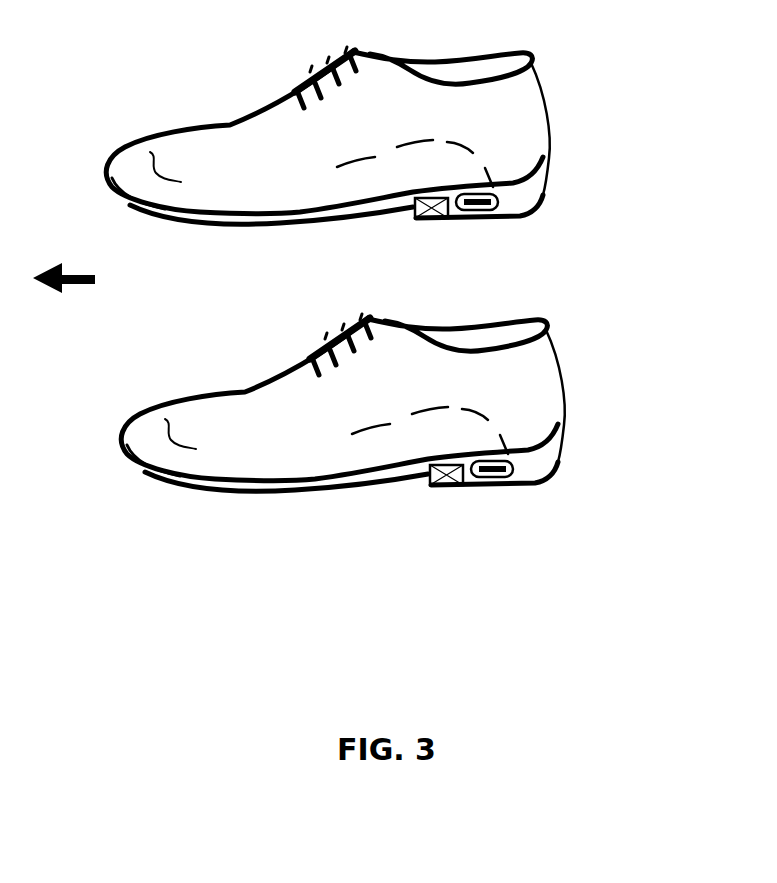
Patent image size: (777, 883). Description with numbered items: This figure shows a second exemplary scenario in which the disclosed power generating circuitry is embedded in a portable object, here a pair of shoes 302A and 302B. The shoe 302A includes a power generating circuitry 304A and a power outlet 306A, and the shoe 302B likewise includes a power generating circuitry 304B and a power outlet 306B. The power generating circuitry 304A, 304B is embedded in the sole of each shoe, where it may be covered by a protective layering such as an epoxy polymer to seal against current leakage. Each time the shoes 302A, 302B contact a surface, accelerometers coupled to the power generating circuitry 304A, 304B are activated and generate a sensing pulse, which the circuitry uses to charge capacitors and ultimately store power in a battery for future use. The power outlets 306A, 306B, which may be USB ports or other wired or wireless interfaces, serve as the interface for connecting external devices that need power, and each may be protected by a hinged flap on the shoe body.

The shoe 302A is at (527, 100).
The power generating circuitry 304A is at (415, 218).
The power outlet 306A is at (500, 203).
The shoe 302B is at (555, 381).
The power generating circuitry 304B is at (430, 485).
The power outlet 306B is at (517, 463).